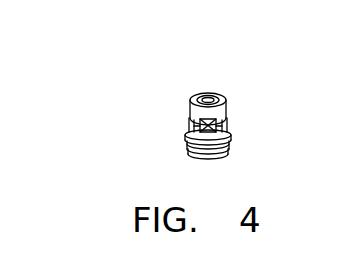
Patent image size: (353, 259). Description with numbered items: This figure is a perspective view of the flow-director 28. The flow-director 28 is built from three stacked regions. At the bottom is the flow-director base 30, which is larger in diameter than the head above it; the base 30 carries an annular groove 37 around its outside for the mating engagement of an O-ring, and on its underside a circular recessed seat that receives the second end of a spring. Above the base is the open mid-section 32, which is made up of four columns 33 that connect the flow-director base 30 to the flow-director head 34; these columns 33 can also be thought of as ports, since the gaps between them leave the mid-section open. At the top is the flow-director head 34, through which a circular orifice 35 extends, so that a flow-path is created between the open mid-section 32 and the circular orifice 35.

The flow-director 28 is at (142, 74).
The flow-director base 30 is at (234, 138).
The open mid-section 32 is at (234, 117).
The columns 33 is at (186, 132).
The flow-director head 34 is at (234, 115).
The circular orifice 35 is at (209, 101).
The annular groove 37 is at (184, 148).